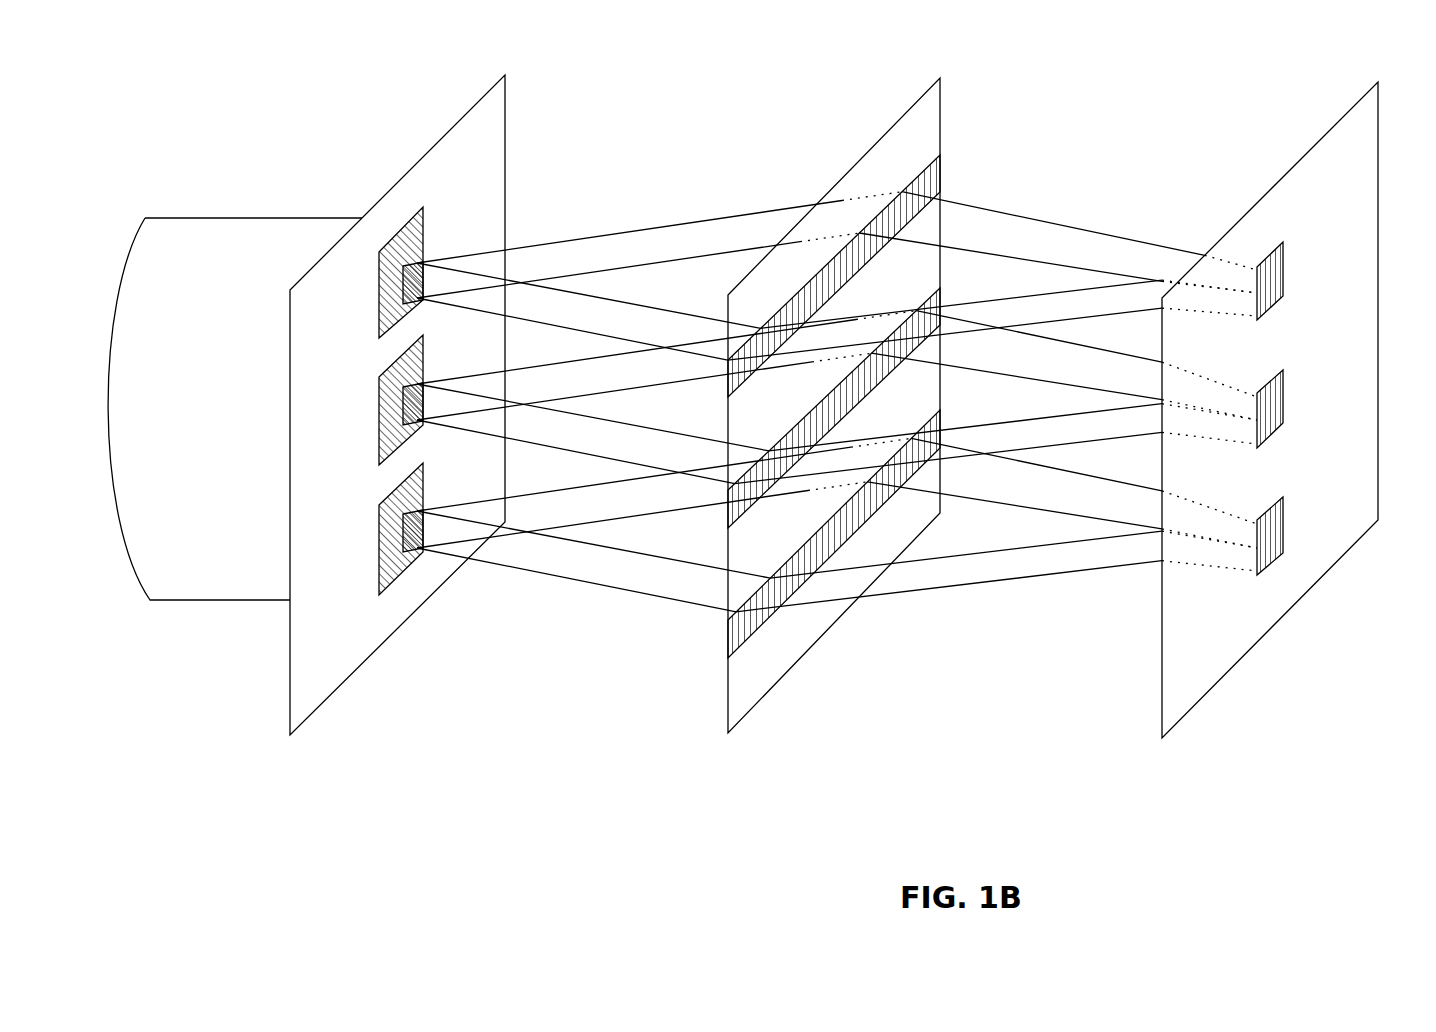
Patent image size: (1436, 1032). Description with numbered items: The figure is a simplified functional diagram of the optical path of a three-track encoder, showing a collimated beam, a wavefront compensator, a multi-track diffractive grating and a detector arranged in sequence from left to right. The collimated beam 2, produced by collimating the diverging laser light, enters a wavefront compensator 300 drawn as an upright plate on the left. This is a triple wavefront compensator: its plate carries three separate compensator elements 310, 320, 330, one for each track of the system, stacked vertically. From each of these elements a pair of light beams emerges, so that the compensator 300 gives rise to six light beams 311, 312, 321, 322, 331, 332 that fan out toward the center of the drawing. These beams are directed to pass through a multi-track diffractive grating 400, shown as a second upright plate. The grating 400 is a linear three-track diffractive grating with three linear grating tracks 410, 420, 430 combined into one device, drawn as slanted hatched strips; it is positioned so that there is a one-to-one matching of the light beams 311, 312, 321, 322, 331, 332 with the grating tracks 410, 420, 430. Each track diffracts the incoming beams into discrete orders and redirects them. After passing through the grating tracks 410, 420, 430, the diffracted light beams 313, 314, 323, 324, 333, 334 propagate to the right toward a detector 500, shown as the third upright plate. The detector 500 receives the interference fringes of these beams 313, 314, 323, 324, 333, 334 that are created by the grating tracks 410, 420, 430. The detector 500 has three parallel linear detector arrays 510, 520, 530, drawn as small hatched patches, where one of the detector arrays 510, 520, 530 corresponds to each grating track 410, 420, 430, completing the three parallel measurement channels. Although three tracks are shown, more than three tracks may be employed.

The collimated beam 2 is at (250, 218).
The wavefront compensator 300 is at (502, 100).
The first light source element 310 is at (422, 222).
The second light source element 320 is at (379, 400).
The third light source element 330 is at (379, 527).
The light beam 311 is at (600, 259).
The light beam 312 is at (604, 322).
The light beam 321 is at (602, 387).
The light beam 322 is at (602, 447).
The light beam 331 is at (602, 511).
The light beam 332 is at (602, 574).
The multi-track diffractive grating 400 is at (928, 120).
The grating track 410 is at (930, 178).
The grating track 420 is at (930, 297).
The grating track 430 is at (737, 634).
The light beam 313 is at (1105, 254).
The light beam 314 is at (1105, 314).
The light beam 323 is at (1105, 382).
The light beam 324 is at (1105, 444).
The light beam 333 is at (1105, 504).
The light beam 334 is at (1105, 569).
The detector 500 is at (1327, 147).
The detector array 510 is at (1280, 268).
The detector array 520 is at (1283, 395).
The detector array 530 is at (1263, 570).